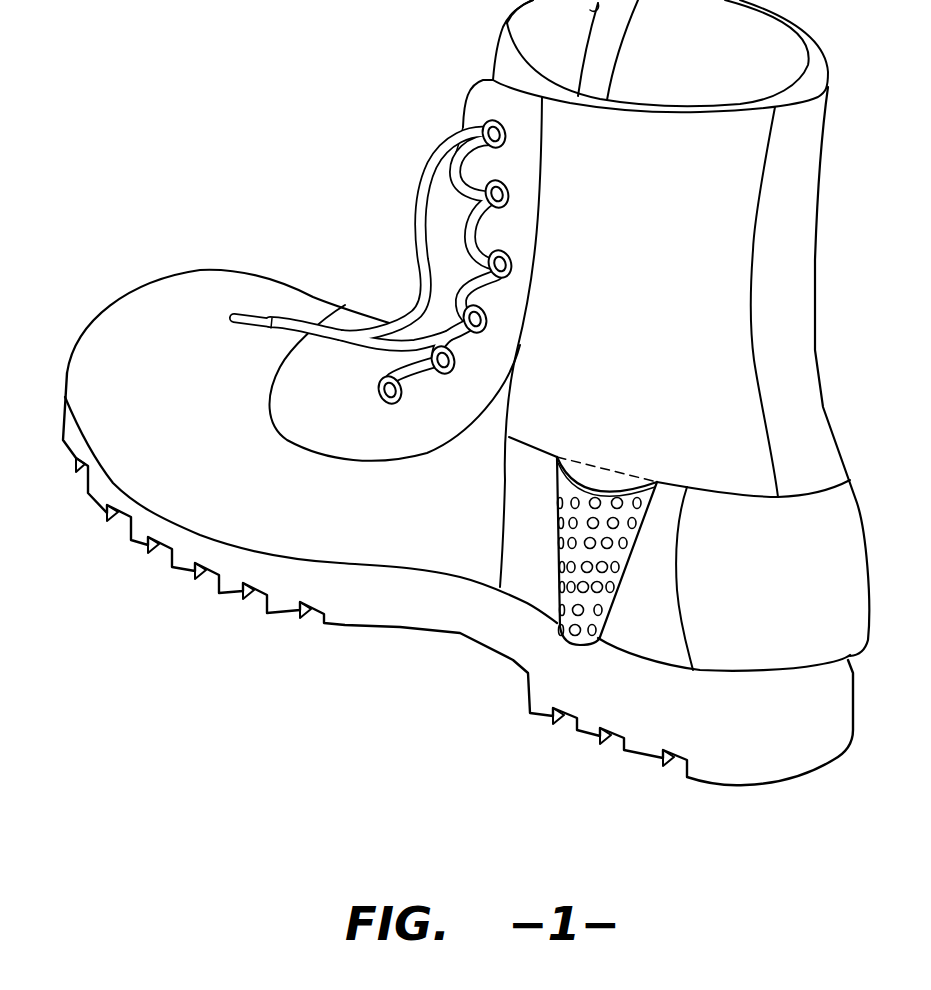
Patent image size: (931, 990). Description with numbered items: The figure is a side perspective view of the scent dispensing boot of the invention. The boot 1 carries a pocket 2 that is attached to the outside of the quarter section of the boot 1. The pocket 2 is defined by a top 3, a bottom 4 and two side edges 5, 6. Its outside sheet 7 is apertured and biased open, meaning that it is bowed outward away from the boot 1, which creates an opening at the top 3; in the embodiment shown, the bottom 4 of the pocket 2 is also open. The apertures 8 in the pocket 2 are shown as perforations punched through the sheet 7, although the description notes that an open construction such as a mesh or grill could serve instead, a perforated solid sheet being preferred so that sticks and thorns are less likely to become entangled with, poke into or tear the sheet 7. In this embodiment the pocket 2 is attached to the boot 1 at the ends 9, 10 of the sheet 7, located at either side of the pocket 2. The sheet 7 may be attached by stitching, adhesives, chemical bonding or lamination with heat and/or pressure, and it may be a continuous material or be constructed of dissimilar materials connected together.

The boot 1 is at (837, 548).
The pocket 2 is at (645, 520).
The top 3 is at (598, 478).
The bottom 4 is at (560, 628).
The side edge 5 is at (557, 537).
The side edge 6 is at (612, 605).
The outside sheet 7 is at (557, 486).
The apertures 8 is at (623, 573).
The end 9 is at (533, 473).
The end 10 is at (660, 562).